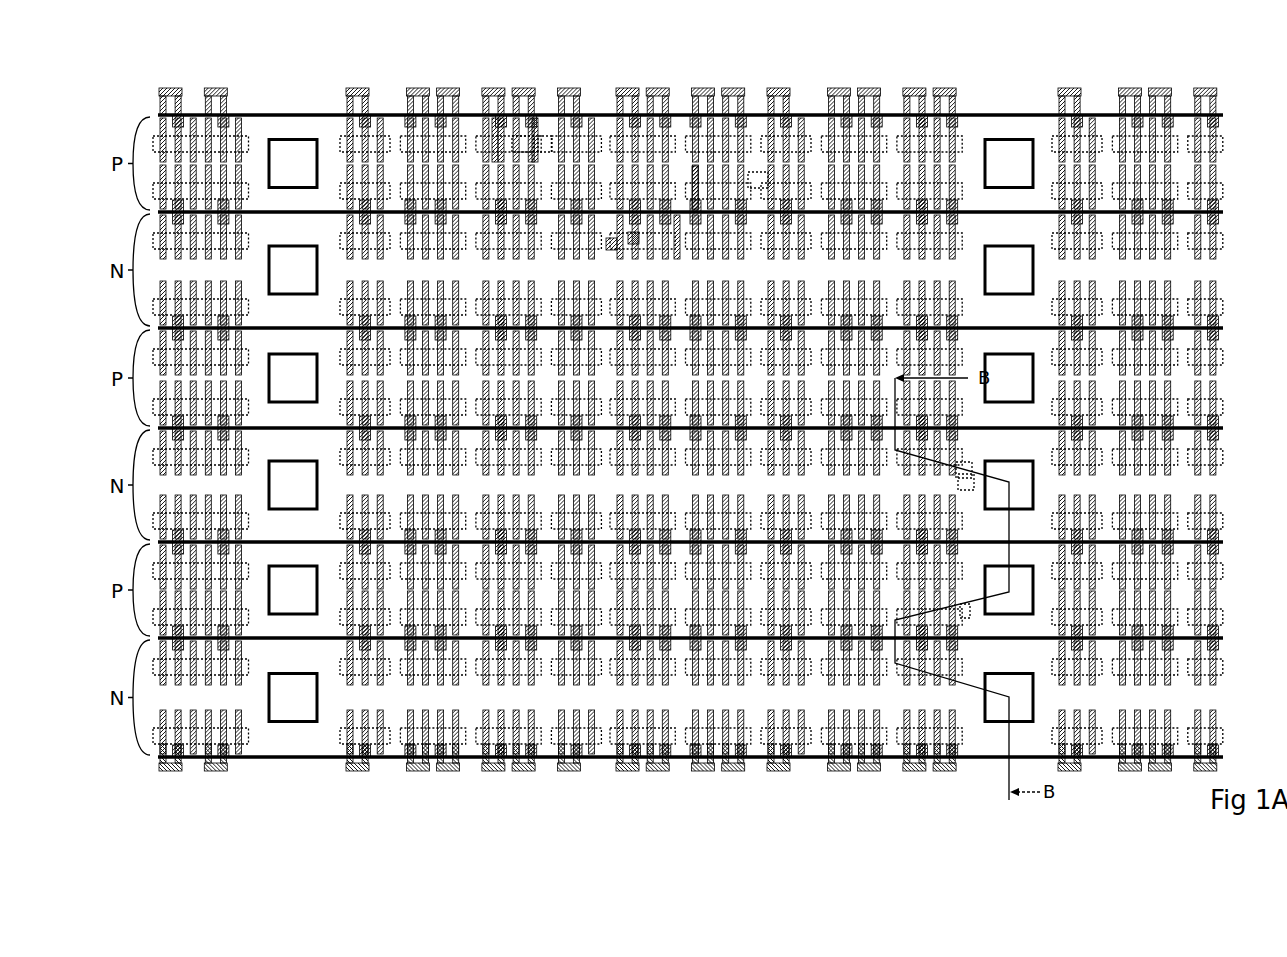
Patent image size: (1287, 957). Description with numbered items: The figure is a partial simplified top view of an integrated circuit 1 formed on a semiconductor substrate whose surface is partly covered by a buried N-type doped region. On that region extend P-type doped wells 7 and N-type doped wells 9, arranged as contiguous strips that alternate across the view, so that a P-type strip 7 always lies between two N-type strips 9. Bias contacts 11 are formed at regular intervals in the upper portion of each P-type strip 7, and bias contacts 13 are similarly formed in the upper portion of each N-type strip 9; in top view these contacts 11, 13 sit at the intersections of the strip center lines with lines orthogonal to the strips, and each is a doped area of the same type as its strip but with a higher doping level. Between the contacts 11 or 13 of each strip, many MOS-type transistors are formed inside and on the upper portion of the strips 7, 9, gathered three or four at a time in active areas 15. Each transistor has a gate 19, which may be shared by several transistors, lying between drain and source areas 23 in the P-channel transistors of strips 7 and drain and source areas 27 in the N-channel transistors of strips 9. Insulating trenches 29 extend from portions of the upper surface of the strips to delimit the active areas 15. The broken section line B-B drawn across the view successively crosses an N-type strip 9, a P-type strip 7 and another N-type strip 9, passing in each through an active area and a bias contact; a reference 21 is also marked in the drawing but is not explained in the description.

The integrated circuit 1 is at (150, 68).
The P-type doped well 7 is at (1226, 163).
The N-type doped well 9 is at (1226, 267).
The bias contact 11 is at (290, 155).
The bias contact 13 is at (289, 270).
The active area 15 is at (495, 137).
The gate 19 is at (535, 140).
The gate contact 21 is at (966, 470).
The drain and source areas 23 is at (522, 140).
The drain and source areas 27 is at (612, 247).
The insulating trench 29 is at (758, 180).